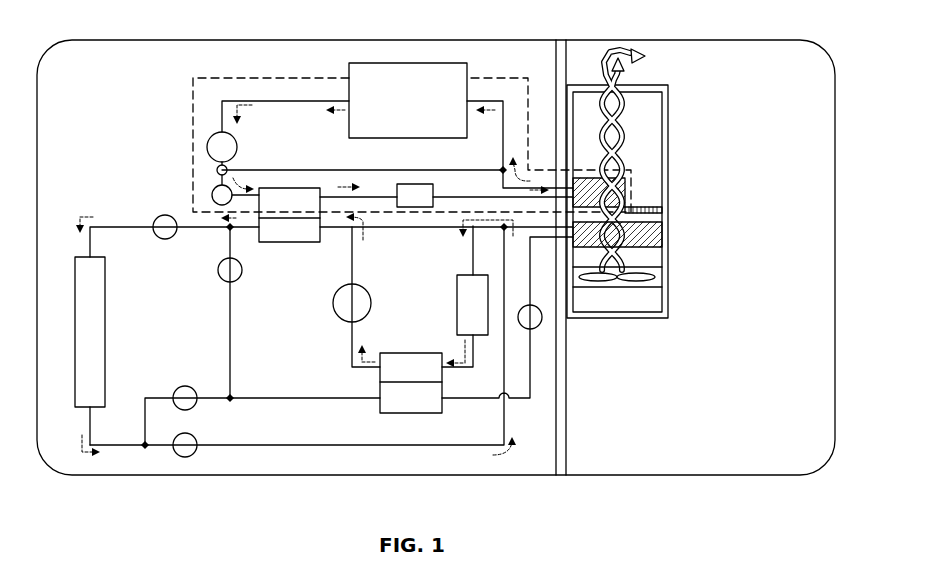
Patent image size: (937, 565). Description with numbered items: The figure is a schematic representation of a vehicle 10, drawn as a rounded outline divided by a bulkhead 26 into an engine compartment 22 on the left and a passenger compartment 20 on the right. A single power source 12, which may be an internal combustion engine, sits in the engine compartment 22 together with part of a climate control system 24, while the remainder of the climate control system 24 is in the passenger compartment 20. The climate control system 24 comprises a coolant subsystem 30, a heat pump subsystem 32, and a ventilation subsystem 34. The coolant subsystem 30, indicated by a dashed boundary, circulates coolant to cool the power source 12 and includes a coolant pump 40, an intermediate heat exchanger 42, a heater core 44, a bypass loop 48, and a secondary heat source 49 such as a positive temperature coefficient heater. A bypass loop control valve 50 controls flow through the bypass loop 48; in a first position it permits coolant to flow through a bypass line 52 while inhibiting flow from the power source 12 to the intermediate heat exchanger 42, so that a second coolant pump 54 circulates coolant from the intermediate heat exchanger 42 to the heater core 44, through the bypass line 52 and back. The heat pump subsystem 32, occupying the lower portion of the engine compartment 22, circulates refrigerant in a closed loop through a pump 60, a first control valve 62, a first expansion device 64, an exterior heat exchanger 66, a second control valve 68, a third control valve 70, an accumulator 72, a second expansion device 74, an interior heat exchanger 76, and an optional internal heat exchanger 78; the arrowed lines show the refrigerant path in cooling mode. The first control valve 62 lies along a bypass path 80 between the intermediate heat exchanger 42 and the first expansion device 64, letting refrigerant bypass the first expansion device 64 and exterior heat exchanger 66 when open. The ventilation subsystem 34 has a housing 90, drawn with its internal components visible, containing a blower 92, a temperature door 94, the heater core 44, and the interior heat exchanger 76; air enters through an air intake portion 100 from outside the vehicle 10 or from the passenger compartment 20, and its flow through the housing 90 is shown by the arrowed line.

The vehicle 10 is at (99, 36).
The power source 12 is at (395, 111).
The passenger compartment 20 is at (764, 197).
The engine compartment 22 is at (68, 98).
The climate control system 24 is at (230, 56).
The bulkhead 26 is at (568, 440).
The coolant subsystem 30 is at (188, 120).
The heat pump subsystem 32 is at (128, 186).
The ventilation subsystem 34 is at (676, 94).
The coolant pump 40 is at (237, 147).
The intermediate heat exchanger 42 is at (290, 188).
The heater core 44 is at (610, 180).
The bypass loop 48 is at (472, 158).
The secondary heat source 49 is at (412, 207).
The bypass loop control valve 50 is at (217, 167).
The bypass line 52 is at (389, 170).
The second coolant pump 54 is at (212, 194).
The pump 60 is at (340, 313).
The first control valve 62 is at (218, 274).
The first expansion device 64 is at (168, 239).
The exterior heat exchanger 66 is at (78, 340).
The second control valve 68 is at (182, 386).
The third control valve 70 is at (193, 435).
The accumulator 72 is at (460, 313).
The second expansion device 74 is at (539, 326).
The interior heat exchanger 76 is at (665, 240).
The internal heat exchanger 78 is at (399, 378).
The bypass path 80 is at (230, 330).
The housing 90 is at (668, 310).
The blower 92 is at (656, 277).
The temperature door 94 is at (650, 210).
The air intake portion 100 is at (598, 307).